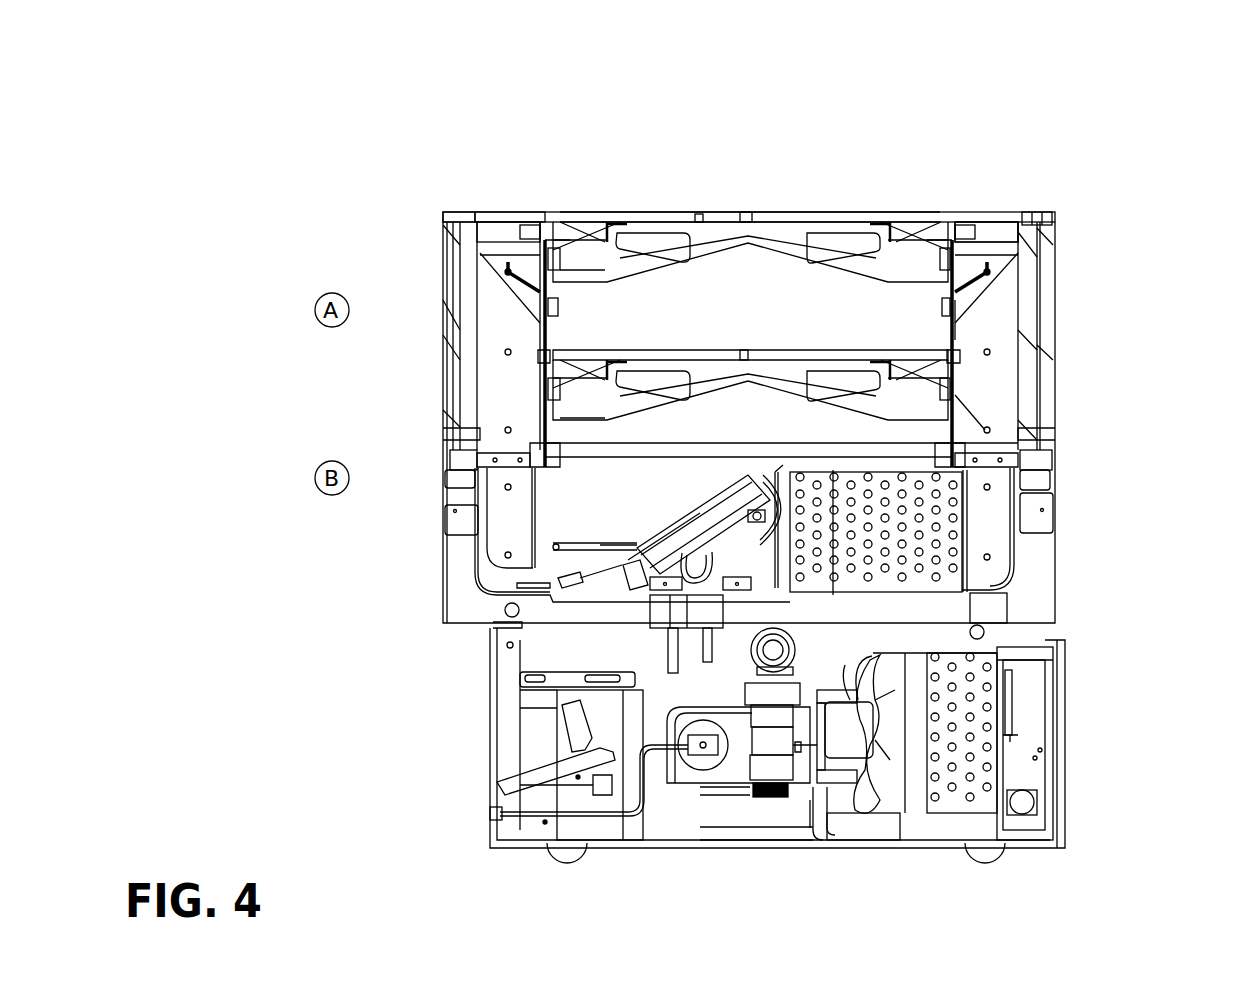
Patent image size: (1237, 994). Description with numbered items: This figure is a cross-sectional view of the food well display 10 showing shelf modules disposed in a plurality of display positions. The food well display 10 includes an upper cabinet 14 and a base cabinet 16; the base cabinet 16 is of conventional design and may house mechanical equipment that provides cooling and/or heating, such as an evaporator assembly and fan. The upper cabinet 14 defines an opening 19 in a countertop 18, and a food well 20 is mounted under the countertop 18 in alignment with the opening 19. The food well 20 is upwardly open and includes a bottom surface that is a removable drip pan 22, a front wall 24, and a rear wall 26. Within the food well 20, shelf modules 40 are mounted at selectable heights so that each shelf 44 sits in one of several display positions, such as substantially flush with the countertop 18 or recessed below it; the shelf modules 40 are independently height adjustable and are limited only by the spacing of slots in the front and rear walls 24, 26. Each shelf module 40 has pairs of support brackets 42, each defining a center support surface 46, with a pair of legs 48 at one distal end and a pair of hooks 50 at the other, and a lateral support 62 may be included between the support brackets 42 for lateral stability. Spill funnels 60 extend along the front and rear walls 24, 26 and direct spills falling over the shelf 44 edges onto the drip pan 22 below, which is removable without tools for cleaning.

The food well display 10 is at (304, 53).
The upper cabinet 14 is at (1148, 208).
The base cabinet 16 is at (1152, 838).
The countertop 18 is at (465, 213).
The opening 19 is at (510, 213).
The food well 20 is at (956, 434).
The drip pan 22 is at (836, 450).
The front wall 24 is at (545, 321).
The rear wall 26 is at (957, 320).
The shelf module 40 is at (645, 210).
The support bracket 42 is at (600, 265).
The shelf 44 is at (780, 210).
The center support surface 46 is at (634, 416).
The legs 48 is at (477, 228).
The hooks 50 is at (985, 227).
The spill funnel 60 is at (540, 296).
The lateral support 62 is at (593, 227).